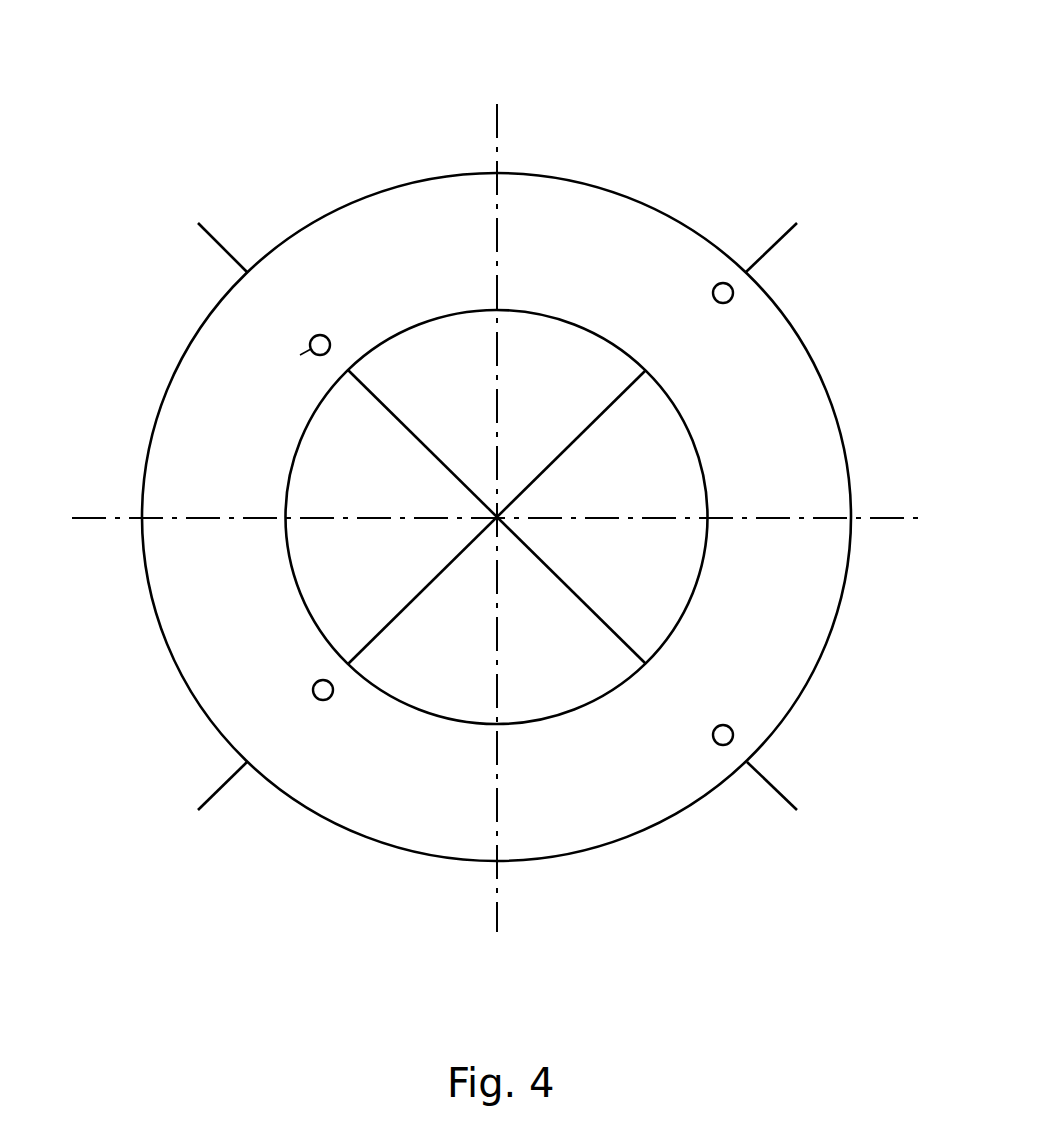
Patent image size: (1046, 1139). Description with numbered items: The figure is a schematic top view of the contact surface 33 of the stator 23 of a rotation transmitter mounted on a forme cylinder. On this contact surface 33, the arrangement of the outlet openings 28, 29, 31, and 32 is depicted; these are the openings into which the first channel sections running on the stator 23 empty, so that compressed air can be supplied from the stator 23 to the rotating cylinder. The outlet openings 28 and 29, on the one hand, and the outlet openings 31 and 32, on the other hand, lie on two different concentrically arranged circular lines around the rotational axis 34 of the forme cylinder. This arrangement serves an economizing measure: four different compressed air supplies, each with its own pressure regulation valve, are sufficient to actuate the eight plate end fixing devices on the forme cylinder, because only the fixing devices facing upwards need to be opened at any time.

The stator 23 is at (459, 96).
The outlet opening 28 is at (725, 303).
The outlet opening 29 is at (722, 725).
The outlet opening 31 is at (326, 700).
The outlet opening 32 is at (323, 336).
The contact surface 33 is at (812, 645).
The rotational axis 34 is at (497, 517).